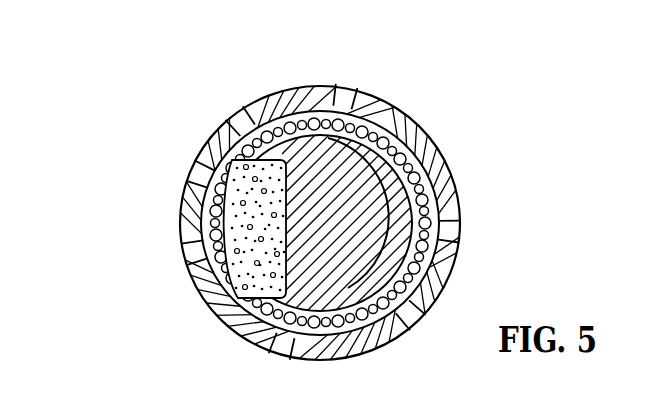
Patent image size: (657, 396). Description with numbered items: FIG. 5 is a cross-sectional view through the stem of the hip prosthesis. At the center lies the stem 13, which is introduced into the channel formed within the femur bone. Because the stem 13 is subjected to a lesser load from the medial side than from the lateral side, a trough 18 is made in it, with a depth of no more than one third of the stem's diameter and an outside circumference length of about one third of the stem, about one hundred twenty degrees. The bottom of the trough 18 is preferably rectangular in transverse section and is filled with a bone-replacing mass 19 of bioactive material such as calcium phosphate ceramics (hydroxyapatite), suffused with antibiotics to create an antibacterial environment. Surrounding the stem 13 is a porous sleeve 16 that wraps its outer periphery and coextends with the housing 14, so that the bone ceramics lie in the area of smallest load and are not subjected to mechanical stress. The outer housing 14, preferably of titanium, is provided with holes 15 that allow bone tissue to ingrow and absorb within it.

The stem 13 is at (432, 150).
The housing 14 is at (192, 200).
The holes 15 is at (238, 116).
The sleeve 16 is at (228, 233).
The trough 18 is at (383, 112).
The bone-replacing mass 19 is at (270, 271).